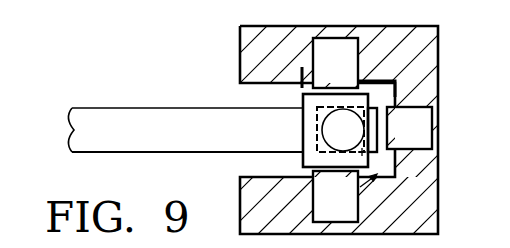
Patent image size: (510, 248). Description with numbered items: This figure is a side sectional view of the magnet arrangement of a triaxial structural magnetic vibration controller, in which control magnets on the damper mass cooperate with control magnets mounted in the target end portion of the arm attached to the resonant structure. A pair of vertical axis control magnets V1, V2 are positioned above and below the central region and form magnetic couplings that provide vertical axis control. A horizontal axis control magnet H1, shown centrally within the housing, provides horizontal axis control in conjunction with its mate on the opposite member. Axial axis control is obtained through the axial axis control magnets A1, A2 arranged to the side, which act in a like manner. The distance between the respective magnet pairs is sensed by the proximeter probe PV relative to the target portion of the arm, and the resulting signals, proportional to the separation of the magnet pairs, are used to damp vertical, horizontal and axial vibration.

The proximeter probe PV is at (185, 113).
The horizontal axis control magnet H1 is at (322, 130).
The vertical axis control magnet V1 is at (335, 63).
The vertical axis control magnet V2 is at (335, 196).
The axial axis control magnet A1 is at (409, 128).
The axial axis control magnet A2 is at (378, 179).